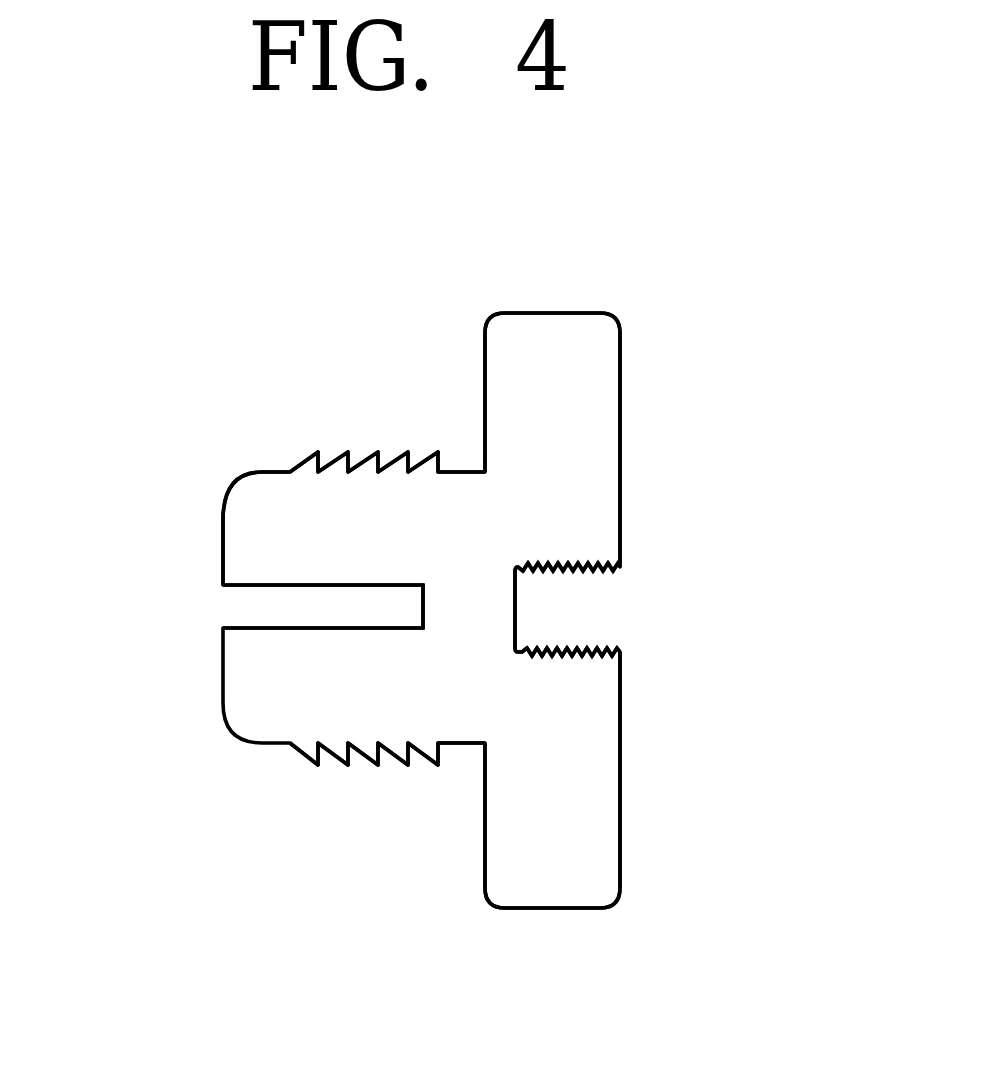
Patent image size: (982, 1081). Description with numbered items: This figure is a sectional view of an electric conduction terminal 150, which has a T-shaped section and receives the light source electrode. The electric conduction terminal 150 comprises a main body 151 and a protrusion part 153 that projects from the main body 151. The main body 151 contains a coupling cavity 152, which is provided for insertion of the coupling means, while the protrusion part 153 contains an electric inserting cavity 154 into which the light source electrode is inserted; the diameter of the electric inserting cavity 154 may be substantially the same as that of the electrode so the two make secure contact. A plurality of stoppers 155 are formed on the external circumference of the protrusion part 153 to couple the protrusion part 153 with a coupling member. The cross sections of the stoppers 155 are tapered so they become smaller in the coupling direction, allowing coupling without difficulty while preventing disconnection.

The electric conduction terminal 150 is at (752, 288).
The main body 151 is at (595, 389).
The coupling cavity 152 is at (585, 570).
The protrusion part 153 is at (262, 472).
The electric inserting cavity 154 is at (250, 585).
The stoppers 155 is at (347, 455).